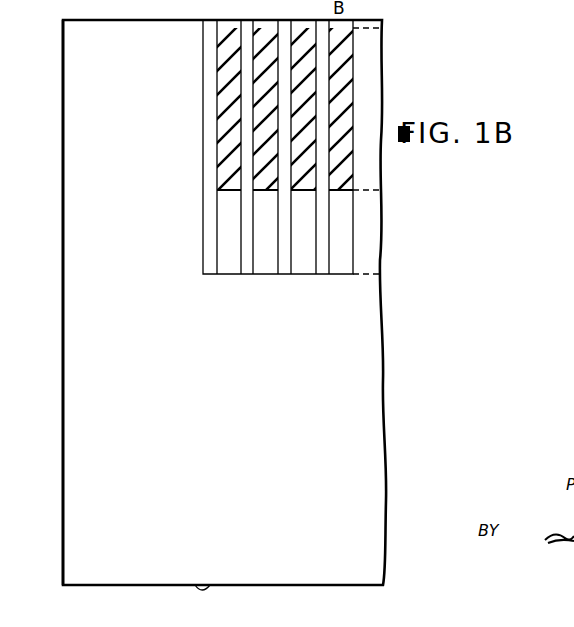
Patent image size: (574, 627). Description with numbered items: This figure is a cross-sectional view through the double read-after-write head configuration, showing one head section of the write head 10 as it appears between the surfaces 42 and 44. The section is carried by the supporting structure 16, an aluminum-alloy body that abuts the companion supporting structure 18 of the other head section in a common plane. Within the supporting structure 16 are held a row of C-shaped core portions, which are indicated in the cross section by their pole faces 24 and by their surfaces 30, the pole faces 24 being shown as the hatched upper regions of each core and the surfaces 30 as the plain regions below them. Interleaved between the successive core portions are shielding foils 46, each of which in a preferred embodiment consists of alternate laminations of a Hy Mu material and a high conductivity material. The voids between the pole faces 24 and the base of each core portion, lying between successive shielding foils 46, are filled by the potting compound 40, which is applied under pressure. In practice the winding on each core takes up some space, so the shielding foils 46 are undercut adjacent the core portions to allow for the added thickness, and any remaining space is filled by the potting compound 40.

The write head 10 is at (63, 338).
The supporting structure 16 is at (88, 273).
The supporting structure 18 is at (414, 4).
The pole faces 24 is at (275, 21).
The surfaces 30 is at (262, 235).
The potting compound 40 is at (257, 95).
The surface 42 is at (95, 19).
The surface 44 is at (195, 585).
The shielding foils 46 is at (283, 268).